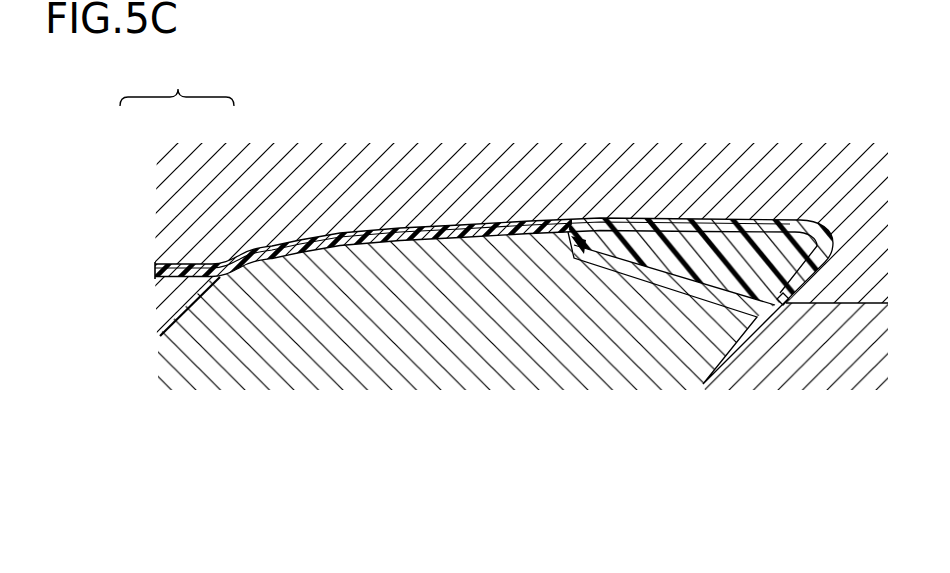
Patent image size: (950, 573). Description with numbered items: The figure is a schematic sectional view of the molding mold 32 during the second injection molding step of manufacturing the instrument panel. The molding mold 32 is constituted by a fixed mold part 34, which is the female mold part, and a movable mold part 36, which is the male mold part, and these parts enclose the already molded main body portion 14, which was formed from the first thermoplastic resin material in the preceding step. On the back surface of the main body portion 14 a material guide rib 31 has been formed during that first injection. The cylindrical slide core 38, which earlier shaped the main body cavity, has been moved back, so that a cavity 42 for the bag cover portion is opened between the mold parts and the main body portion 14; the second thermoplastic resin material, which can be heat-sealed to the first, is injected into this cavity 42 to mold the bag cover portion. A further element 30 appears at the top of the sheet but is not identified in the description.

The main body portion 14 is at (486, 199).
The resin molded body 30 is at (813, 4).
The material guide rib 31 is at (716, 238).
The molding mold 32 is at (177, 82).
The fixed mold part 34 is at (210, 200).
The movable mold part 36 is at (165, 305).
The slide core 38 is at (440, 348).
The cavity for the bag cover portion 42 is at (427, 228).